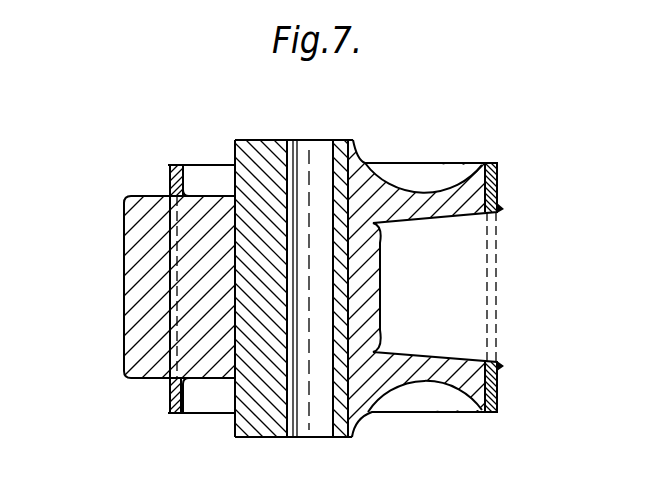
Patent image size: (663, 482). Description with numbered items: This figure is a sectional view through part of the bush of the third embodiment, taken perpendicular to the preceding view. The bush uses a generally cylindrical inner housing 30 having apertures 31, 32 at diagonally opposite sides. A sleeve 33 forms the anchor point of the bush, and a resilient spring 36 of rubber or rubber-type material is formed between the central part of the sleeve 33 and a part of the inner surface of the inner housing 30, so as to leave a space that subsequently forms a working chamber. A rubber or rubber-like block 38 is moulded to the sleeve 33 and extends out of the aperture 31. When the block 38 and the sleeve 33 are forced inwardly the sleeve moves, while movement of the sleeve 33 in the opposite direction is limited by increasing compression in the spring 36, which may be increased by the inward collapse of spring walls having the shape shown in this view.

The inner housing 30 is at (170, 168).
The aperture 31 is at (172, 193).
The aperture 32 is at (487, 276).
The sleeve 33 is at (263, 150).
The resilient spring 36 is at (415, 198).
The rubber block 38 is at (130, 337).